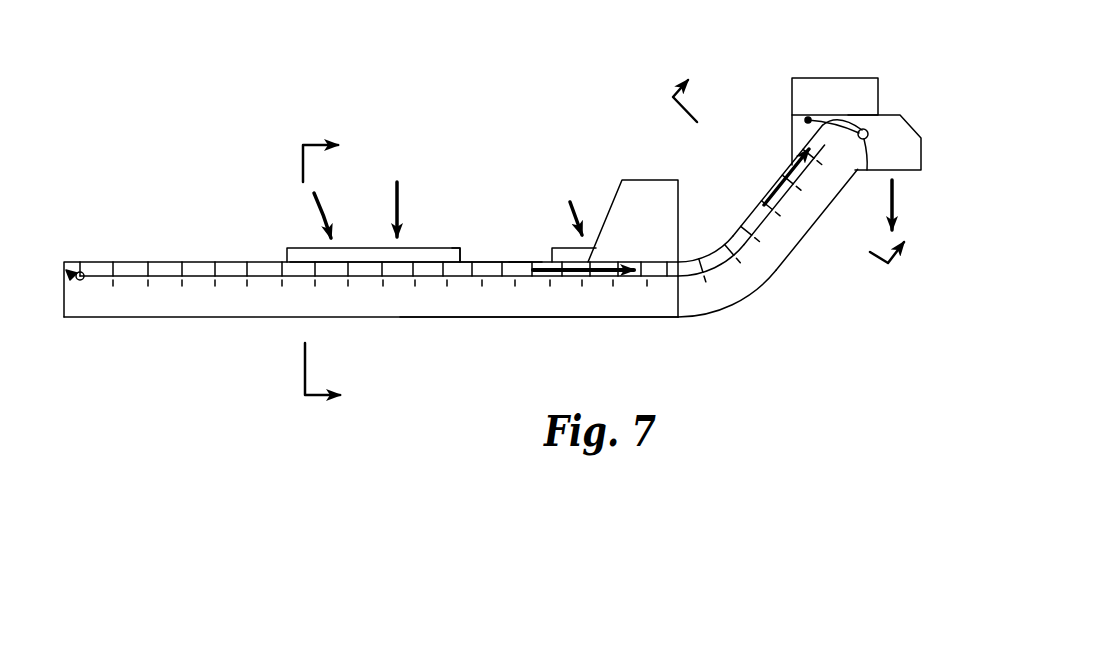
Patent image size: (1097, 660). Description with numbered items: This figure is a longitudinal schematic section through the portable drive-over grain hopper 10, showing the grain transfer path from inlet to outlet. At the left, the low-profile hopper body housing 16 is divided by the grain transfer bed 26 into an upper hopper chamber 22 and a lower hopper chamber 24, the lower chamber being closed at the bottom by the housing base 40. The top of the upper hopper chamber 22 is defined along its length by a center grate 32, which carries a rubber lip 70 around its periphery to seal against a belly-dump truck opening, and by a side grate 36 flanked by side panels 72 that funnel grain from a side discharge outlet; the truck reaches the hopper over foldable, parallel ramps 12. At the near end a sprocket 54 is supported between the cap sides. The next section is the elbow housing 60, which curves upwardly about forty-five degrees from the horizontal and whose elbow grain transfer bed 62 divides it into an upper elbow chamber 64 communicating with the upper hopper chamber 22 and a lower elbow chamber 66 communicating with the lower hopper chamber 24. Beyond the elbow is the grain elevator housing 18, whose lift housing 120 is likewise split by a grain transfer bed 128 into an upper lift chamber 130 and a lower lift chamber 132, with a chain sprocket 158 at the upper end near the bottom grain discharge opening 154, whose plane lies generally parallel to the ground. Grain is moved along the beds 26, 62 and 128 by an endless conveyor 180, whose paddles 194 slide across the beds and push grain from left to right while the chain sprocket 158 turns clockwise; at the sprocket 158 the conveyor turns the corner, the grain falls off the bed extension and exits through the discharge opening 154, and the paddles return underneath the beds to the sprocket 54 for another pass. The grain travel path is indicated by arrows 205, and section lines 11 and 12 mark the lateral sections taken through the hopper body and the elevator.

The portable drive-over grain hopper 10 is at (146, 176).
The section line 11- 11 is at (320, 268).
The foldable, parallel ramps 12 is at (784, 188).
The hopper body housing 16 is at (529, 260).
The grain elevator housing 18 is at (881, 81).
The upper hopper chamber 22 is at (491, 268).
The lower hopper chamber 24 is at (527, 305).
The grain transfer bed 26 is at (433, 278).
The center grate 32 is at (460, 248).
The side grate 36 is at (591, 246).
The housing base 40 is at (156, 318).
The sprocket 54 is at (88, 282).
The elbow housing 60 is at (705, 301).
The elbow grain transfer bed 62 is at (732, 260).
The upper elbow chamber 64 is at (738, 223).
The lower elbow chamber 66 is at (765, 262).
The rubber lip 70 is at (283, 257).
The side panels 72 is at (637, 195).
The lift housing 120 is at (780, 168).
The grain transfer bed 128 is at (812, 235).
The upper lift chamber 130 is at (806, 118).
The lower lift chamber 132 is at (820, 185).
The bottom grain discharge opening 154 is at (904, 172).
The chain sprocket 158 is at (856, 174).
The endless conveyor 180 is at (400, 289).
The paddles 194 is at (210, 268).
The arrows 205 is at (906, 33).